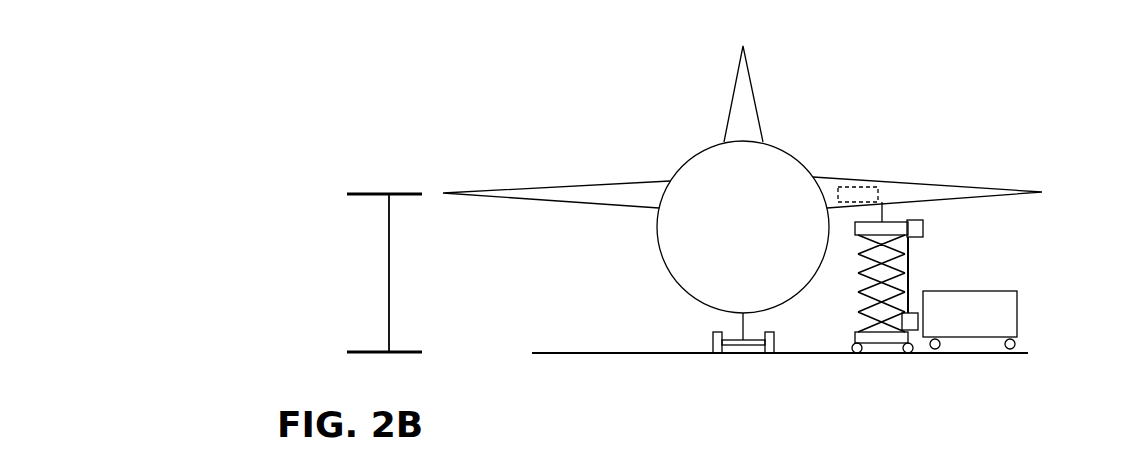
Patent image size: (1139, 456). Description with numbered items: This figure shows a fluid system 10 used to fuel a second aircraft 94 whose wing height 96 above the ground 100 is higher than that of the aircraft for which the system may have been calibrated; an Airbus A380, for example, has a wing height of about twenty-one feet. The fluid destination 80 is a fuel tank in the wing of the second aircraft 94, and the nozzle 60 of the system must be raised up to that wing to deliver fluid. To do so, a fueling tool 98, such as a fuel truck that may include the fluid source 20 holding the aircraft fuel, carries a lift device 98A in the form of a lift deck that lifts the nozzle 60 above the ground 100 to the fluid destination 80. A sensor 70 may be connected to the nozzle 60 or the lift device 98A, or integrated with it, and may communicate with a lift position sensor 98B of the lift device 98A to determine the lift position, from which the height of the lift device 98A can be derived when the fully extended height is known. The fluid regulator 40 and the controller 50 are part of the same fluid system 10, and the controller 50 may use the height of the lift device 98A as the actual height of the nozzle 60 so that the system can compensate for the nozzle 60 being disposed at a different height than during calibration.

The fluid system 10 is at (769, 199).
The second aircraft 94 is at (800, 137).
The wing height 96 is at (388, 278).
The ground 100 is at (600, 354).
The fluid destination 80 is at (868, 187).
The nozzle 60 is at (886, 208).
The sensor 70 is at (1013, 236).
The lift position sensor 98B is at (923, 230).
The lift device 98A is at (986, 316).
The fueling tool 98 is at (986, 316).
The fluid regulator 40 is at (960, 362).
The controller 50 is at (913, 332).
The fluid source 20 is at (1025, 317).